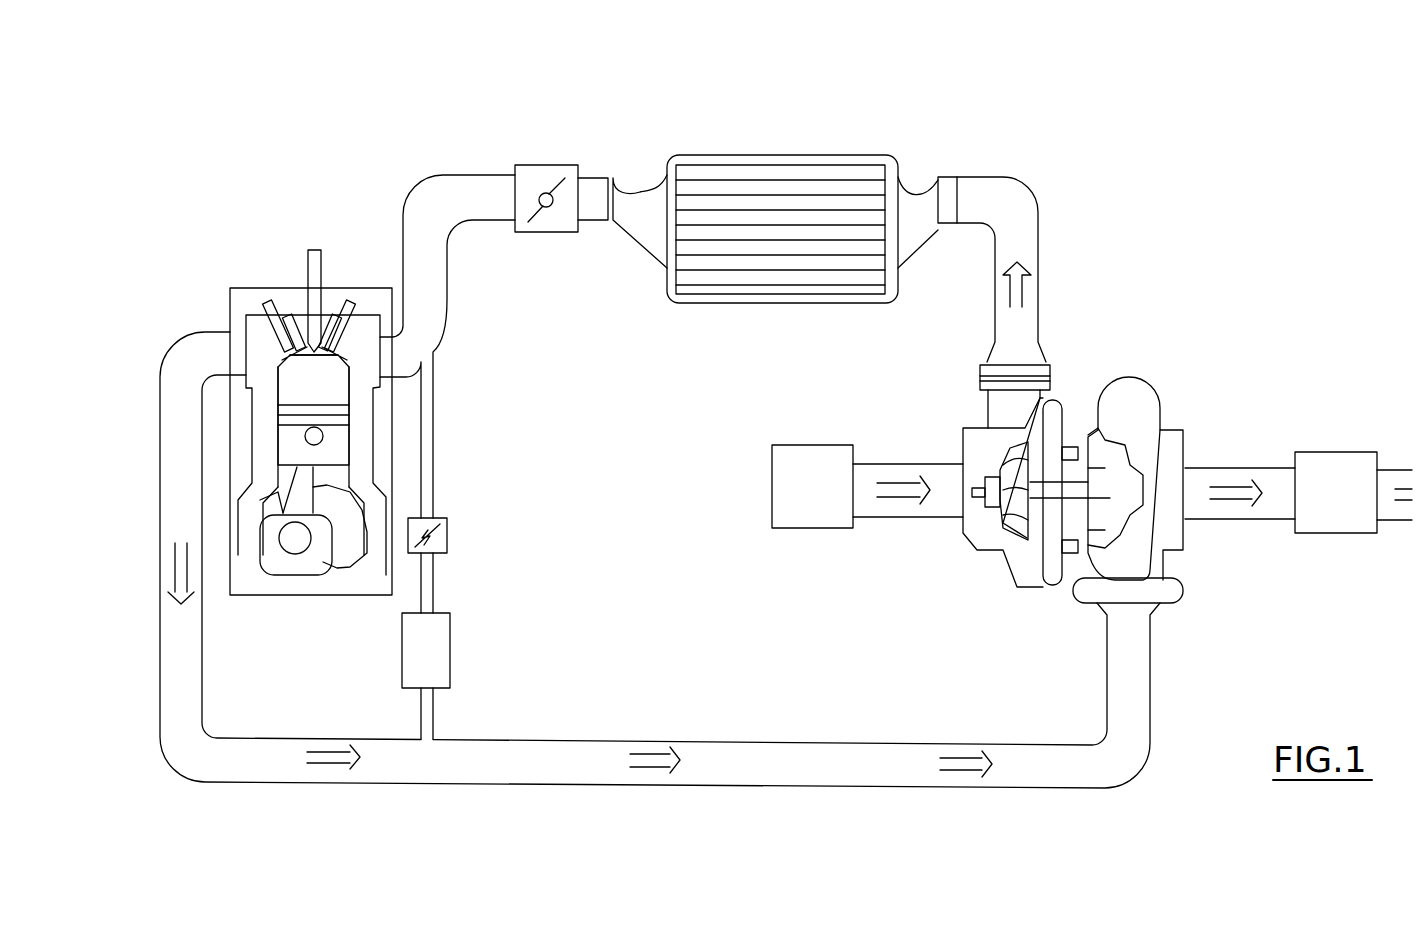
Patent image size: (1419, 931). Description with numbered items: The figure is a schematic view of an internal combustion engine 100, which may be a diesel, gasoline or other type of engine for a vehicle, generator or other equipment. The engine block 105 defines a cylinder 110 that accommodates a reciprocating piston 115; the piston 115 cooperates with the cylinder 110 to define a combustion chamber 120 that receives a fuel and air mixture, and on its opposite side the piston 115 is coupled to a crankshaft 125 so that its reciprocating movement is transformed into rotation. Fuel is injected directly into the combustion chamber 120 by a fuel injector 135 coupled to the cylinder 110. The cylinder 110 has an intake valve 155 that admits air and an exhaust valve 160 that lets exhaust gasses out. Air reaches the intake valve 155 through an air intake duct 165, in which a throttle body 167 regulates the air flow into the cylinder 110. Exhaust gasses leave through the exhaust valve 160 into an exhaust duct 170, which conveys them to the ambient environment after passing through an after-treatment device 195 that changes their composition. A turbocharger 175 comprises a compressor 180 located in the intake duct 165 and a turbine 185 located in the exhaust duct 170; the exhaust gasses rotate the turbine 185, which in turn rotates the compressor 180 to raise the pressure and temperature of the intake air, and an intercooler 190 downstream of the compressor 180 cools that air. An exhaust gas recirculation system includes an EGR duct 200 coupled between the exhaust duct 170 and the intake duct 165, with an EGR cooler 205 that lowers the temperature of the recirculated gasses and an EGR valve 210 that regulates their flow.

The internal combustion engine 100 is at (226, 606).
The engine block 105 is at (300, 415).
The cylinder 110 is at (276, 383).
The piston 115 is at (302, 450).
The combustion chamber 120 is at (308, 396).
The crankshaft 125 is at (293, 542).
The fuel injector 135 is at (313, 268).
The intake valve 155 is at (365, 328).
The exhaust valve 160 is at (260, 322).
The air intake duct 165 is at (892, 470).
The throttle body 167 is at (545, 195).
The exhaust duct 170 is at (540, 768).
The turbocharger 175 is at (1086, 378).
The compressor 180 is at (1015, 545).
The turbine 185 is at (1145, 410).
The intercooler 190 is at (770, 180).
The after-treatment device 195 is at (1340, 458).
The EGR duct 200 is at (430, 407).
The EGR cooler 205 is at (450, 655).
The EGR valve 210 is at (446, 548).